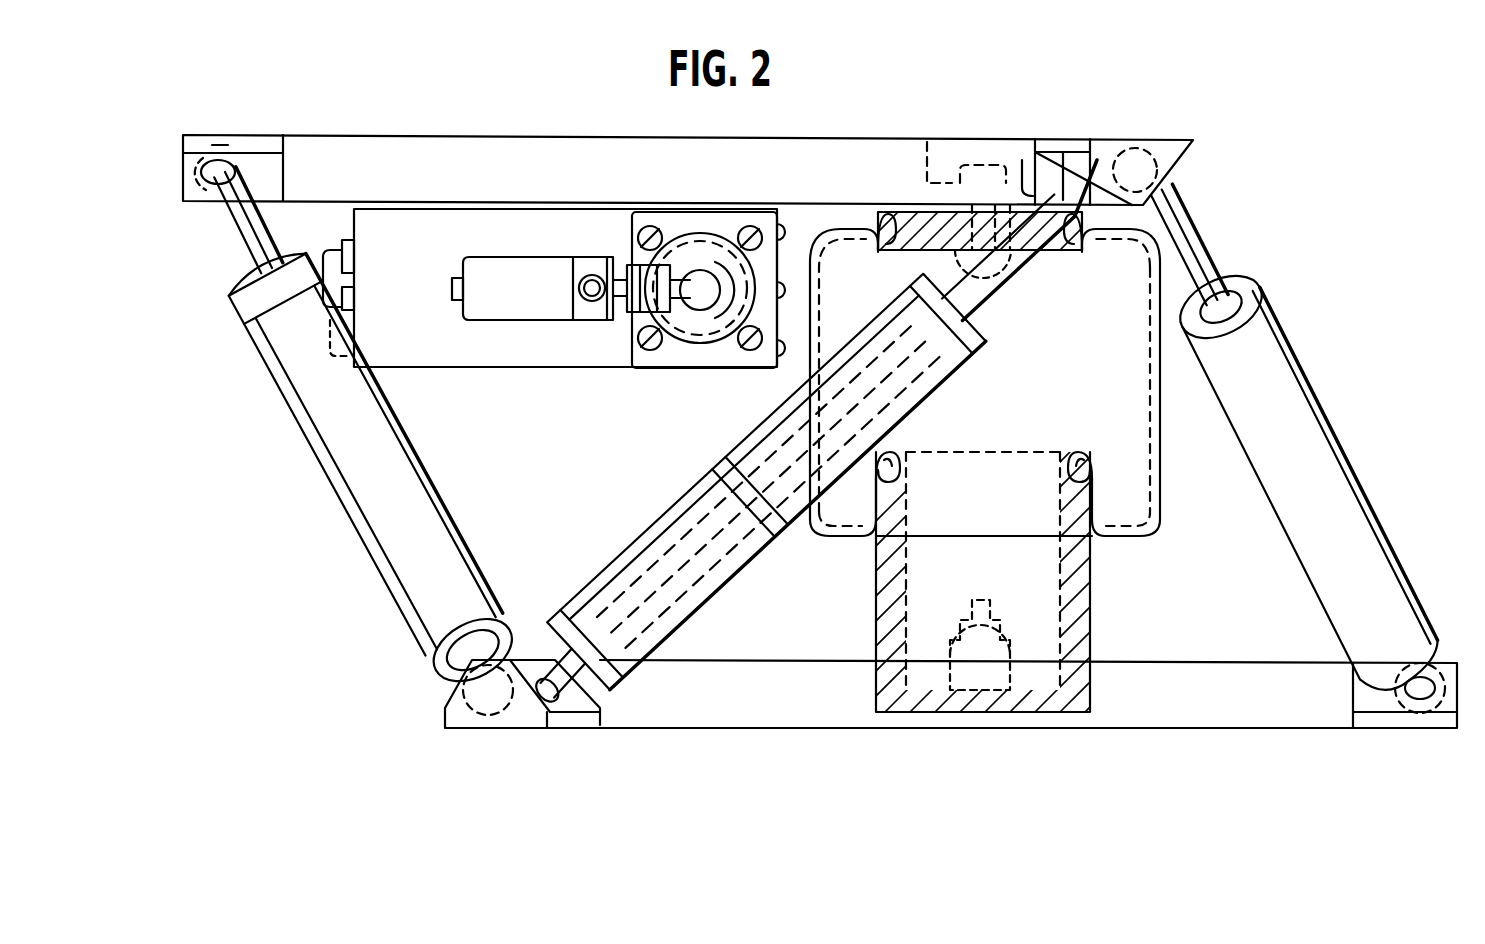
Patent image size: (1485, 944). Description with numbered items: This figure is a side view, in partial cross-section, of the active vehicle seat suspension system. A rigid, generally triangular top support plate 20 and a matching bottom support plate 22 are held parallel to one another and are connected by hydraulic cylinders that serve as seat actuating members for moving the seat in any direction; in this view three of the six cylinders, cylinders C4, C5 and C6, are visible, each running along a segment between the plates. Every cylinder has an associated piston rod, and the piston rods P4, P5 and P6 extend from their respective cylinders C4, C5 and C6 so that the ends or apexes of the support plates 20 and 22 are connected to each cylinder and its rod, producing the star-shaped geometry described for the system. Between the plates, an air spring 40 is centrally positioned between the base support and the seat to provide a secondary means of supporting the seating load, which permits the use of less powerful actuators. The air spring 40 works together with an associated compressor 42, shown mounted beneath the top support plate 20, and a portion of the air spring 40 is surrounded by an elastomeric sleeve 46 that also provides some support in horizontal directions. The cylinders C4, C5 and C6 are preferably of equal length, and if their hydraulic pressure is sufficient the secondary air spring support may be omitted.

The top support plate 20 is at (614, 193).
The bottom support plate 22 is at (746, 719).
The air spring 40 is at (1164, 400).
The compressor 42 is at (492, 367).
The elastomeric sleeve 46 is at (1090, 625).
The piston rod P4 is at (1195, 213).
The piston rod P5 is at (1015, 270).
The piston rod P6 is at (240, 247).
The hydraulic cylinder C4 is at (1322, 441).
The hydraulic cylinder C5 is at (535, 580).
The hydraulic cylinder C6 is at (357, 512).